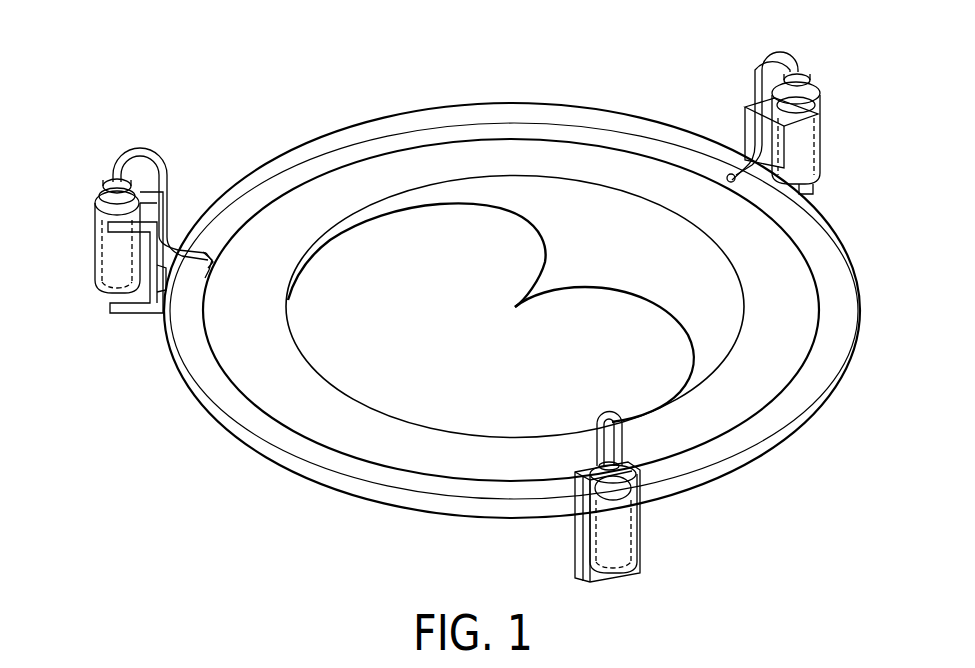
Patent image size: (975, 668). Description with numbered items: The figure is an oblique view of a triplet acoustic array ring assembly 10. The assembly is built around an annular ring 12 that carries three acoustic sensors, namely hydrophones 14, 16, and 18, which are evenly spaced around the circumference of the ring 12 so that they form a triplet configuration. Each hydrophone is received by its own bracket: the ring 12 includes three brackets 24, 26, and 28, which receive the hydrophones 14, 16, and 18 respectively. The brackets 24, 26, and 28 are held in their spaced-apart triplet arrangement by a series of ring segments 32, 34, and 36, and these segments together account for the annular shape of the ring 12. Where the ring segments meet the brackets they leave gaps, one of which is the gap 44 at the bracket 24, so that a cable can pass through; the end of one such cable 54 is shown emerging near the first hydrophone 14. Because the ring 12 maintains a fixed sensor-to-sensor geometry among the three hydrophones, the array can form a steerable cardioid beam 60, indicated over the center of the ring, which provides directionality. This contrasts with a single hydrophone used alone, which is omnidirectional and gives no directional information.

The ring assembly 10 is at (245, 70).
The ring 12 is at (243, 152).
The acoustic sensor 14 is at (121, 252).
The acoustic sensor 16 is at (806, 148).
The acoustic sensor 18 is at (622, 533).
The bracket 24 is at (133, 315).
The bracket 26 is at (742, 124).
The bracket 28 is at (577, 538).
The ring segment 32 is at (265, 428).
The ring segment 34 is at (408, 107).
The ring segment 36 is at (807, 378).
The gap 44 is at (226, 272).
The cable 54 is at (128, 147).
The steerable cardioid beam 60 is at (481, 200).